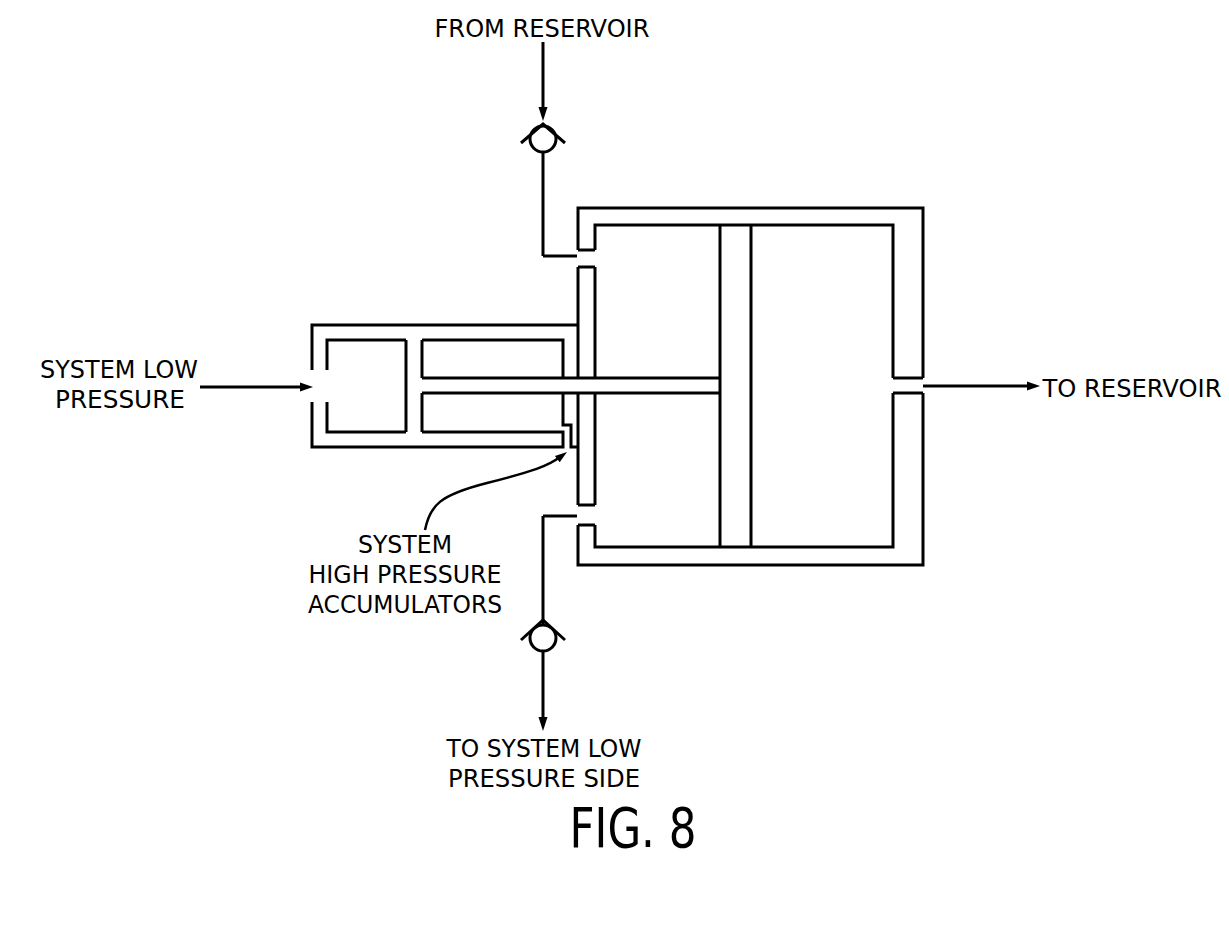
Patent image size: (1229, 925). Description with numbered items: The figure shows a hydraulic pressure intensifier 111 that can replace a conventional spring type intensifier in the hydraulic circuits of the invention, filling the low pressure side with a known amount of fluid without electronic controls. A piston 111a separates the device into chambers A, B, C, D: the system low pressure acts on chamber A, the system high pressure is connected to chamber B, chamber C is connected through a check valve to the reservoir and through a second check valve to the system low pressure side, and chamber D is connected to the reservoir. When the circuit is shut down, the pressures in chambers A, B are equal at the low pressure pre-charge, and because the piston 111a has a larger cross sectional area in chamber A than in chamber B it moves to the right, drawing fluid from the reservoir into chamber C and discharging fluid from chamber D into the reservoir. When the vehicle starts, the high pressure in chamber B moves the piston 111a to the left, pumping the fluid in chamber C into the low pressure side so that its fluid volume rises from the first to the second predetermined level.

The pressure intensifier 111 is at (988, 164).
The piston 111a is at (415, 353).
The chamber A is at (359, 386).
The chamber B is at (492, 386).
The chamber C is at (664, 386).
The chamber D is at (837, 386).